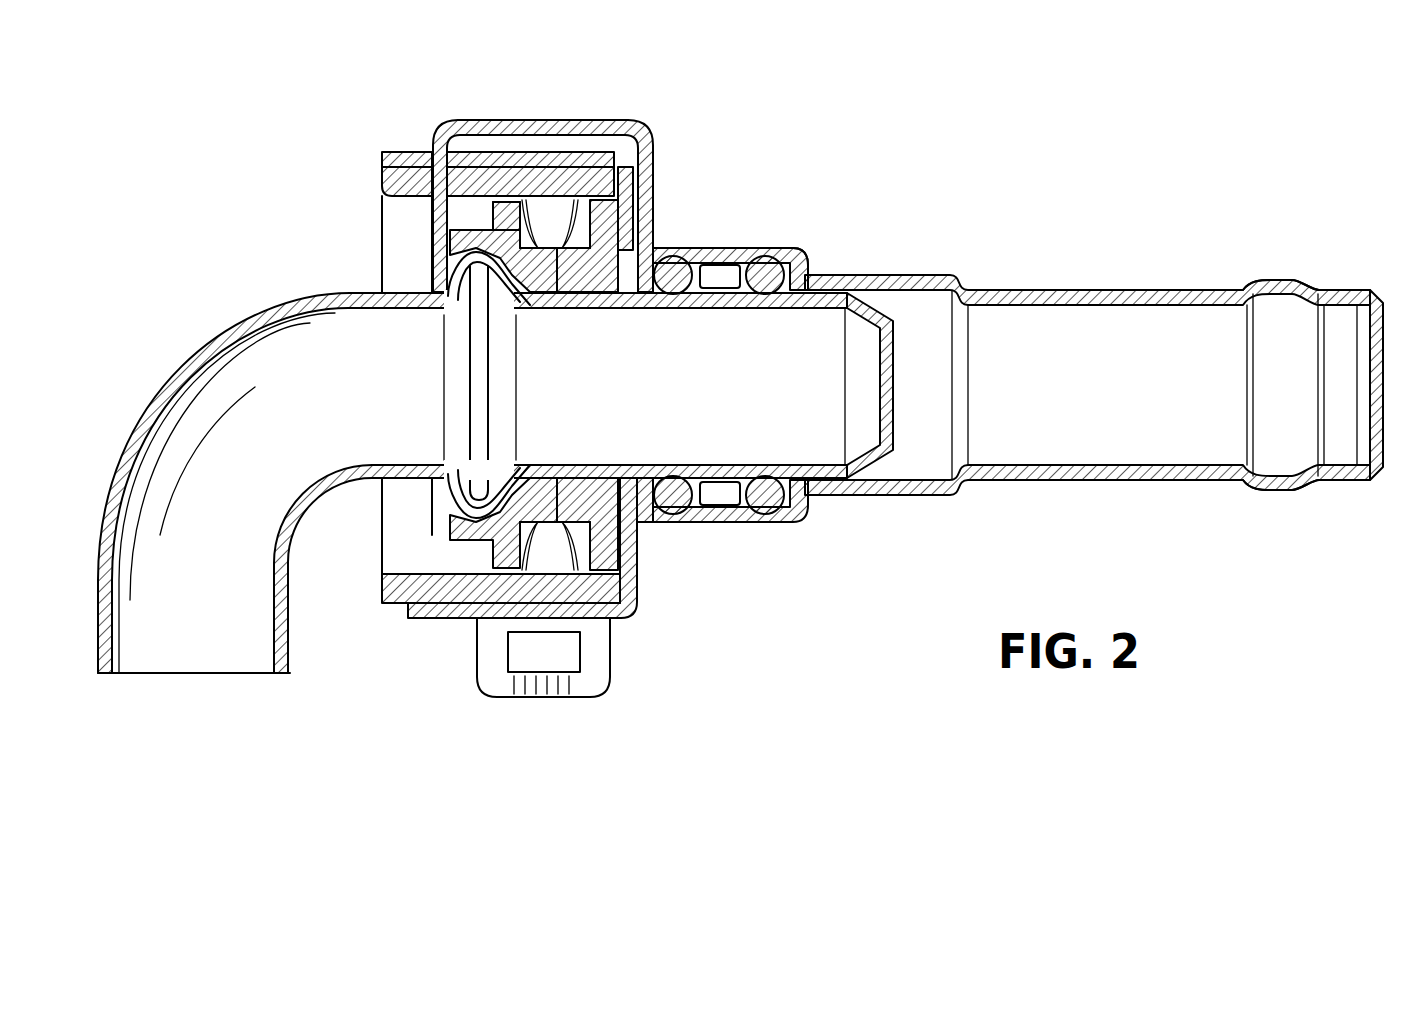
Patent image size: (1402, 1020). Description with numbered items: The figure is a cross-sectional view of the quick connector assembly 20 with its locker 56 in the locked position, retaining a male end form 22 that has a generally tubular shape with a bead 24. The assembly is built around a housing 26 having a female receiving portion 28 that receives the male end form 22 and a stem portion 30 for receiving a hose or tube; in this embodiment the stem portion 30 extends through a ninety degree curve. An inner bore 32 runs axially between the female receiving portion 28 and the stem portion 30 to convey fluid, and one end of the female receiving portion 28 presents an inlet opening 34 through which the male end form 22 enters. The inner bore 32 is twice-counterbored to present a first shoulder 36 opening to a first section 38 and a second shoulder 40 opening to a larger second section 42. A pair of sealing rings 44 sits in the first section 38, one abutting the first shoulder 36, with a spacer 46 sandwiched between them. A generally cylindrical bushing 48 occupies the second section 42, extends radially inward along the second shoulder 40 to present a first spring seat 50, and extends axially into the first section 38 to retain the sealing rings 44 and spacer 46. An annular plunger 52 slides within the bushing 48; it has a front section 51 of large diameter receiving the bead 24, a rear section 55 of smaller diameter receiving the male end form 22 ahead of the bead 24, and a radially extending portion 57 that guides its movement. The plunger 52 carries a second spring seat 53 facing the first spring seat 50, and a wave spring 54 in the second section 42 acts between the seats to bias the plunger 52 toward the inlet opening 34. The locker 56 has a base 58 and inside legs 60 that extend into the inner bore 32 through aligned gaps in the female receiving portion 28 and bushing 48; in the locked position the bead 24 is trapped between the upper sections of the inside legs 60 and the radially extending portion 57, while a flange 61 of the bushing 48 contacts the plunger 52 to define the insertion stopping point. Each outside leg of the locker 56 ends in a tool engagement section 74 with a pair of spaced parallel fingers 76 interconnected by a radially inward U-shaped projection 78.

The quick connector assembly 20 is at (703, 166).
The male end form 22 is at (232, 334).
The bead 24 is at (488, 300).
The housing 26 is at (888, 270).
The female receiving portion 28 is at (388, 152).
The stem portion 30 is at (1070, 295).
The inner bore 32 is at (590, 155).
The inlet opening 34 is at (382, 205).
The first shoulder 36 is at (770, 252).
The first section 38 is at (808, 575).
The second shoulder 40 is at (640, 180).
The second section 42 is at (633, 735).
The sealing rings 44 is at (765, 252).
The spacer 46 is at (725, 500).
The bushing 48 is at (402, 208).
The first spring seat 50 is at (566, 202).
The front section 51 is at (452, 290).
The plunger 52 is at (522, 468).
The second spring seat 53 is at (538, 205).
The spring 54 is at (563, 520).
The rear section 55 is at (540, 292).
The locker 56 is at (562, 112).
The radially extending portion 57 is at (500, 560).
The base 58 is at (540, 120).
The inside legs 60 is at (440, 245).
The flange 61 is at (585, 292).
The tool engagement section 74 is at (553, 667).
The fingers 76 is at (488, 650).
The U-shaped projection 78 is at (545, 690).